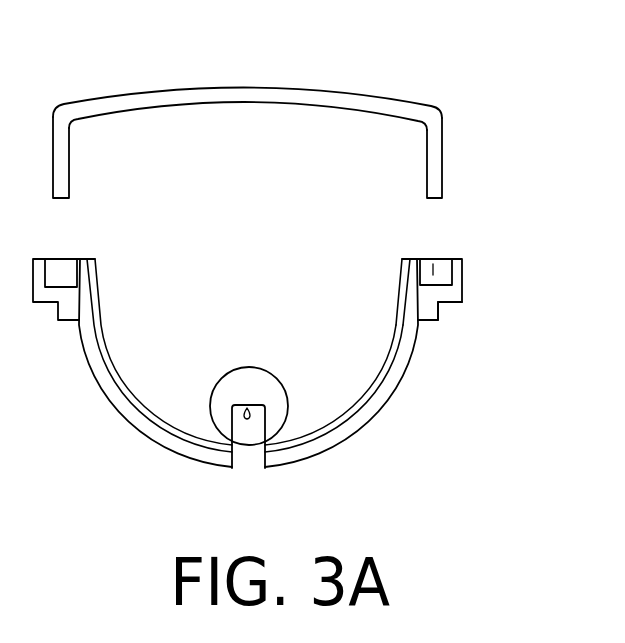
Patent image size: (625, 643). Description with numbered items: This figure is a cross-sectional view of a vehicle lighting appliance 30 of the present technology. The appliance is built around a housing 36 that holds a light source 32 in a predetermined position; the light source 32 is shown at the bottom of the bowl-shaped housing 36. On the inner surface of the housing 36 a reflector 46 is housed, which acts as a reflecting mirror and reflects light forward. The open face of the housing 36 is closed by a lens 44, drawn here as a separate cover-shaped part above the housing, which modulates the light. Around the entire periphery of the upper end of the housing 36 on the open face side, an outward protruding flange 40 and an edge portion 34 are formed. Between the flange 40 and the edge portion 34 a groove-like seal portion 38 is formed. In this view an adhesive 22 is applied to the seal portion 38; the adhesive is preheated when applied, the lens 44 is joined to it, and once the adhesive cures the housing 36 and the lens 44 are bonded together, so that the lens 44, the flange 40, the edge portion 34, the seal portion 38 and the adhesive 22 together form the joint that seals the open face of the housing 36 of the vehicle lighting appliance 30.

The vehicle lighting appliance 30 is at (303, 107).
The lens 44 is at (185, 88).
The edge portion 34 is at (413, 258).
The adhesive 22 is at (437, 258).
The flange 40 is at (476, 280).
The seal portion 38 is at (443, 299).
The housing 36 is at (377, 413).
The reflector 46 is at (103, 320).
The light source 32 is at (275, 426).